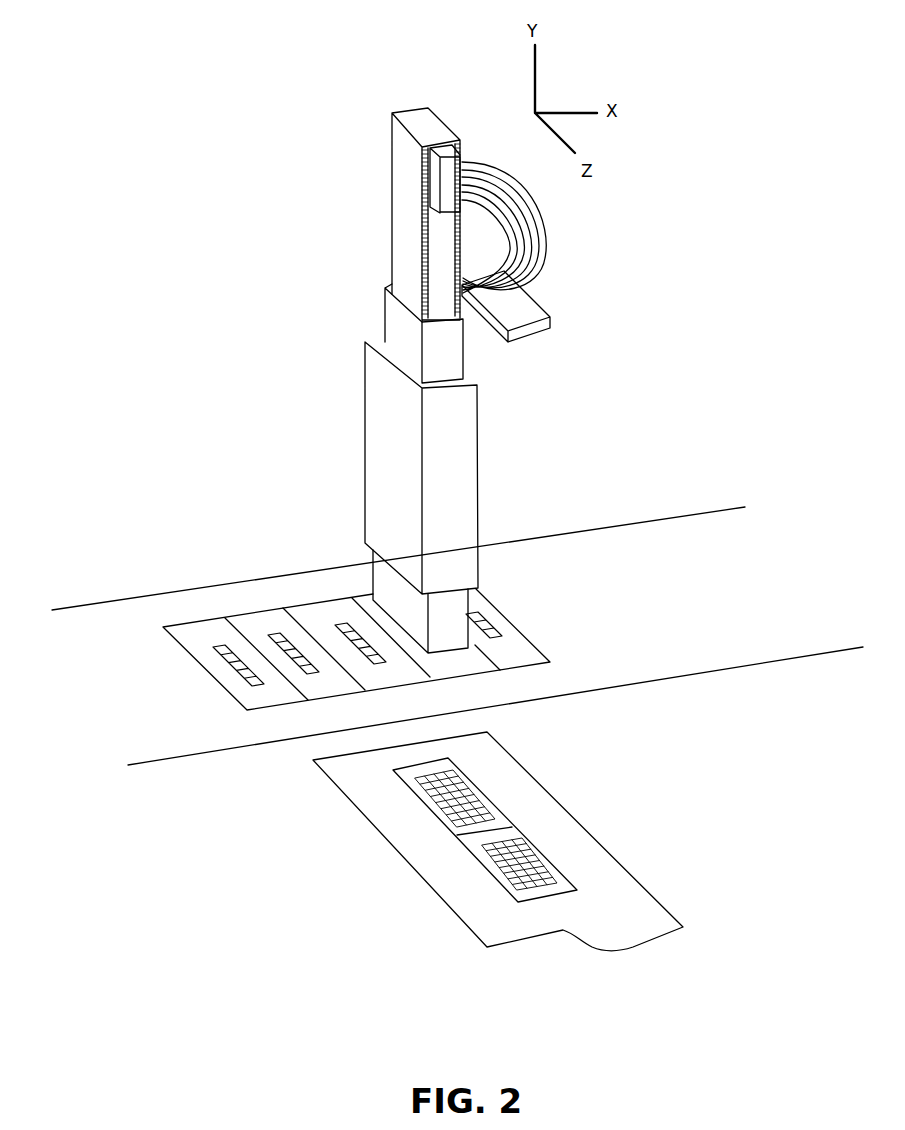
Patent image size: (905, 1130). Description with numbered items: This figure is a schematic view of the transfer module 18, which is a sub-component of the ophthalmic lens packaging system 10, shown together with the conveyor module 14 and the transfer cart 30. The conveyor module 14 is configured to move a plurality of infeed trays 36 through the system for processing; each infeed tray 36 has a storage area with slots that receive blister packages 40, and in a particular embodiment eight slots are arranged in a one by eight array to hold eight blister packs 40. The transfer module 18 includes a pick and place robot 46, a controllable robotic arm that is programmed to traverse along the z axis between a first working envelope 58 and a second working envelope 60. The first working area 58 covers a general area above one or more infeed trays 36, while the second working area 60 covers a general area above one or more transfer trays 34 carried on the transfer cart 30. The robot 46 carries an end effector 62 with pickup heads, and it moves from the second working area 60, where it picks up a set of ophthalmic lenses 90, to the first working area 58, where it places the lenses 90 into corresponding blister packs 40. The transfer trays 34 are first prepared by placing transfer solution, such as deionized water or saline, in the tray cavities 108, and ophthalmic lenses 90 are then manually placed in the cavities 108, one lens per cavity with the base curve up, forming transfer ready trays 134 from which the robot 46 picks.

The system 10 is at (700, 290).
The conveyor module 14 is at (594, 558).
The transfer module 18 is at (301, 468).
The transfer cart 30 is at (448, 914).
The transfer tray 34 is at (474, 789).
The infeed tray 36 is at (252, 618).
The blister package 40 is at (228, 655).
The pick and place robot 46 is at (360, 294).
The first working envelope 58 is at (502, 523).
The second working envelope 60 is at (398, 864).
The end effector 62 is at (383, 583).
The ophthalmic lens 90 is at (535, 861).
The tray cavity 108 is at (438, 792).
The transfer ready tray 134 is at (358, 829).